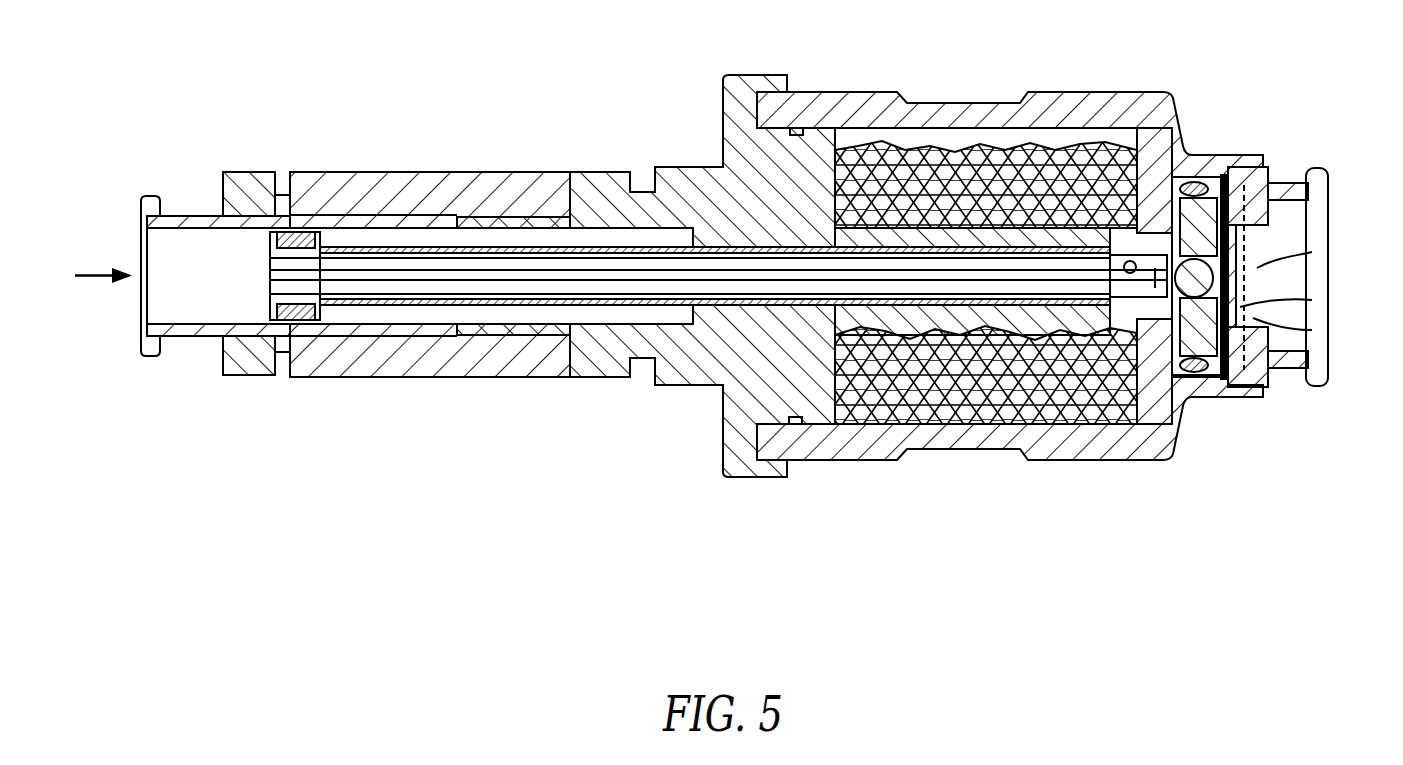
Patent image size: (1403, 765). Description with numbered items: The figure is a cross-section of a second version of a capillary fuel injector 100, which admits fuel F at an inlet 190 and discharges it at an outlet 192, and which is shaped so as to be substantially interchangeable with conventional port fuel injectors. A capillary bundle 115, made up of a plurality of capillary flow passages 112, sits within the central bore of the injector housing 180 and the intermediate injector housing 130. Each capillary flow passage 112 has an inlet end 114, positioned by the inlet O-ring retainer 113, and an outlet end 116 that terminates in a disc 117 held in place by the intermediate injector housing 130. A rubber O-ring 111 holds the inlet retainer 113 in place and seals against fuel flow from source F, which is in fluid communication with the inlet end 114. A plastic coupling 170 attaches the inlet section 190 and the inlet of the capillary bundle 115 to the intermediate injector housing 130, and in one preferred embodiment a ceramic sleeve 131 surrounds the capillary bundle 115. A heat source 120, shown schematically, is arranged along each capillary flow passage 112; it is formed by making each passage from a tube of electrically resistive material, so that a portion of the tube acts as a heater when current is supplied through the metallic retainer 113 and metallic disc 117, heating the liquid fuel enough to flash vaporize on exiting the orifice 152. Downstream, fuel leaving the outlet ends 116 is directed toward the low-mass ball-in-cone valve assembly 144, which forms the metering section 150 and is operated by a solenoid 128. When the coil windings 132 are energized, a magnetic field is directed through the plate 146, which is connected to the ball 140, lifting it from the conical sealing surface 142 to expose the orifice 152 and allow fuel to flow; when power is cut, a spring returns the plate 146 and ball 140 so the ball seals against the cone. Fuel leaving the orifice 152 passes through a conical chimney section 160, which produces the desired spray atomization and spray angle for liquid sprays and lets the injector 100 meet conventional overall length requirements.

The capillary fuel injector 100 is at (334, 566).
The rubber O-ring 111 is at (312, 232).
The capillary flow passages 112 is at (341, 265).
The inlet O-ring retainer 113 is at (268, 242).
The inlet end 114 is at (270, 262).
The capillary bundle 115 is at (385, 250).
The outlet end 116 is at (1152, 385).
The disc 117 is at (1172, 140).
The heat source 120 is at (942, 260).
The solenoid 128 is at (858, 385).
The intermediate injector housing 130 is at (822, 410).
The ceramic sleeve 131 is at (788, 300).
The coil windings 132 is at (1033, 405).
The ball 140 is at (1257, 268).
The conical sealing surface 142 is at (1253, 318).
The ball-in-cone valve assembly 144 is at (1312, 208).
The plate 146 is at (1203, 385).
The metering section 150 is at (1240, 307).
The orifice 152 is at (1243, 262).
The conical chimney section 160 is at (1325, 203).
The plastic coupling 170 is at (452, 378).
The injector housing 180 is at (855, 92).
The inlet 190 is at (141, 331).
The outlet 192 is at (1318, 355).